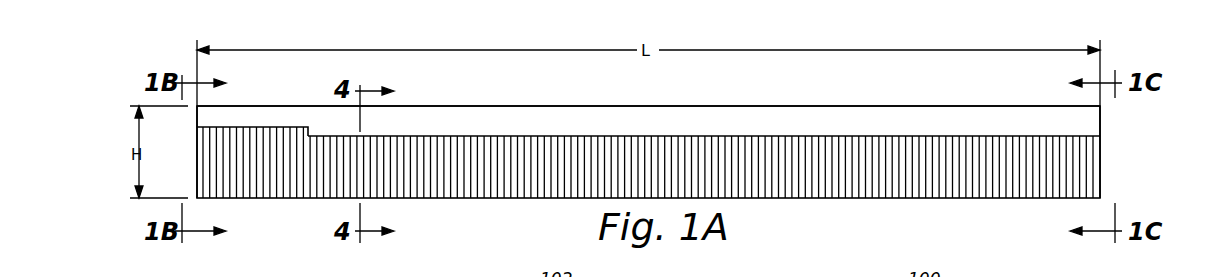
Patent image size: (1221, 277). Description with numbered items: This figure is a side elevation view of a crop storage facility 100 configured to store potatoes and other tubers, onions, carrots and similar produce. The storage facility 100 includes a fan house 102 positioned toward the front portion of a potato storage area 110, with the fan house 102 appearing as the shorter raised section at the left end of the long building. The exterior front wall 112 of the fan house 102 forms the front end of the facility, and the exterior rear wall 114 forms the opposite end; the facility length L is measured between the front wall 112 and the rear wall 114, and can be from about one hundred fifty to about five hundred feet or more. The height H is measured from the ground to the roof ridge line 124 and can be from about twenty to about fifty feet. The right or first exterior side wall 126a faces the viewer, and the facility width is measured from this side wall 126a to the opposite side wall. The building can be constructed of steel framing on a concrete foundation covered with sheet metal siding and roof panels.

The storage facility 100 is at (711, 88).
The fan house 102 is at (252, 115).
The potato storage area 110 is at (865, 118).
The exterior front wall 112 is at (196, 165).
The exterior rear wall 114 is at (1101, 148).
The roof ridge line 124 is at (475, 105).
The first exterior side wall 126a is at (952, 173).